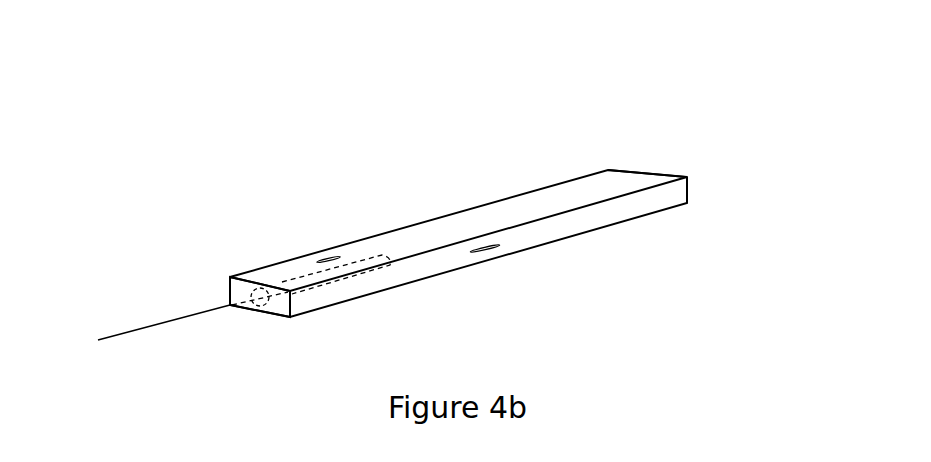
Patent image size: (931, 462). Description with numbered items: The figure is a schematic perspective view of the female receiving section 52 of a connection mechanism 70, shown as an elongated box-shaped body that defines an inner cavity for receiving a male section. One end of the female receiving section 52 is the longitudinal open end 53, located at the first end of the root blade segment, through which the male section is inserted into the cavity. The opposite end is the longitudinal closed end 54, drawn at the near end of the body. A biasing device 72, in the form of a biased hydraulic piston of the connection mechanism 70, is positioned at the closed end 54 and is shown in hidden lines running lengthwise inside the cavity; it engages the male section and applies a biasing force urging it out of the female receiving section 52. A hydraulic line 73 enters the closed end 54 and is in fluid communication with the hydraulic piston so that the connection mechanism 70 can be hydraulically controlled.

The connection mechanism 70 is at (373, 153).
The female receiving section 52 is at (505, 198).
The longitudinal open end 53 is at (665, 178).
The longitudinal closed end 54 is at (282, 315).
The biasing device 72 is at (305, 284).
The hydraulic line 73 is at (133, 330).